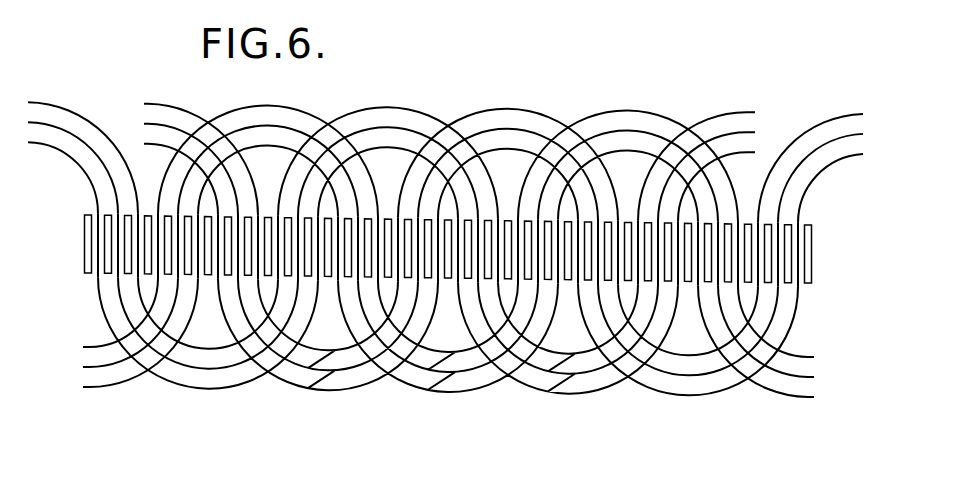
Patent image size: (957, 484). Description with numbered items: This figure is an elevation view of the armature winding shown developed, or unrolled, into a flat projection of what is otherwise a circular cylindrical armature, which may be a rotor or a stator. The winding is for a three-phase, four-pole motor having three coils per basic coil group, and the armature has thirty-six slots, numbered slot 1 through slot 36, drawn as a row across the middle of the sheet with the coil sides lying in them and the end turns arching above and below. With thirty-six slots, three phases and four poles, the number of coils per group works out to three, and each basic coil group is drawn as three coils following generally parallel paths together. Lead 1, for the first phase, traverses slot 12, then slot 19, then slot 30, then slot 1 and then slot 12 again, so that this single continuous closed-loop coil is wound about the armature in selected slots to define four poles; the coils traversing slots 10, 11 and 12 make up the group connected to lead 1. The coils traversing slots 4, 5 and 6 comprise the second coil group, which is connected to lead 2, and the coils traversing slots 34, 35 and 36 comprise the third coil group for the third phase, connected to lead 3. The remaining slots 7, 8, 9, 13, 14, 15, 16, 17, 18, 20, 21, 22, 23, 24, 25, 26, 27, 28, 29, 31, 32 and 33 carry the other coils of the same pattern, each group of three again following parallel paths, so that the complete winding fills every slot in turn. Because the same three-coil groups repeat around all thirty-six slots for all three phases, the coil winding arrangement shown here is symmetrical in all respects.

The lead 1 is at (220, 213).
The lead 2 is at (240, 213).
The lead 3 is at (260, 213).
The slot 4 is at (284, 208).
The slot 5 is at (294, 210).
The slot 6 is at (341, 286).
The slot 7 is at (356, 288).
The slot 8 is at (370, 291).
The slot 9 is at (380, 214).
The slot 10 is at (412, 210).
The slot 11 is at (422, 207).
The slot 12 is at (466, 282).
The slot 13 is at (479, 285).
The slot 14 is at (489, 288).
The slot 15 is at (500, 213).
The slot 16 is at (532, 209).
The slot 17 is at (542, 206).
The slot 18 is at (585, 280).
The slot 19 is at (598, 283).
The slot 20 is at (608, 286).
The slot 21 is at (620, 212).
The slot 22 is at (652, 208).
The slot 23 is at (662, 205).
The slot 24 is at (701, 279).
The slot 25 is at (716, 282).
The slot 26 is at (722, 282).
The slot 27 is at (740, 210).
The slot 28 is at (770, 208).
The slot 29 is at (784, 212).
The slot 30 is at (800, 282).
The slot 31 is at (96, 205).
The slot 32 is at (124, 203).
The slot 33 is at (139, 211).
The slot 34 is at (162, 281).
The slot 35 is at (180, 282).
The slot 36 is at (199, 283).